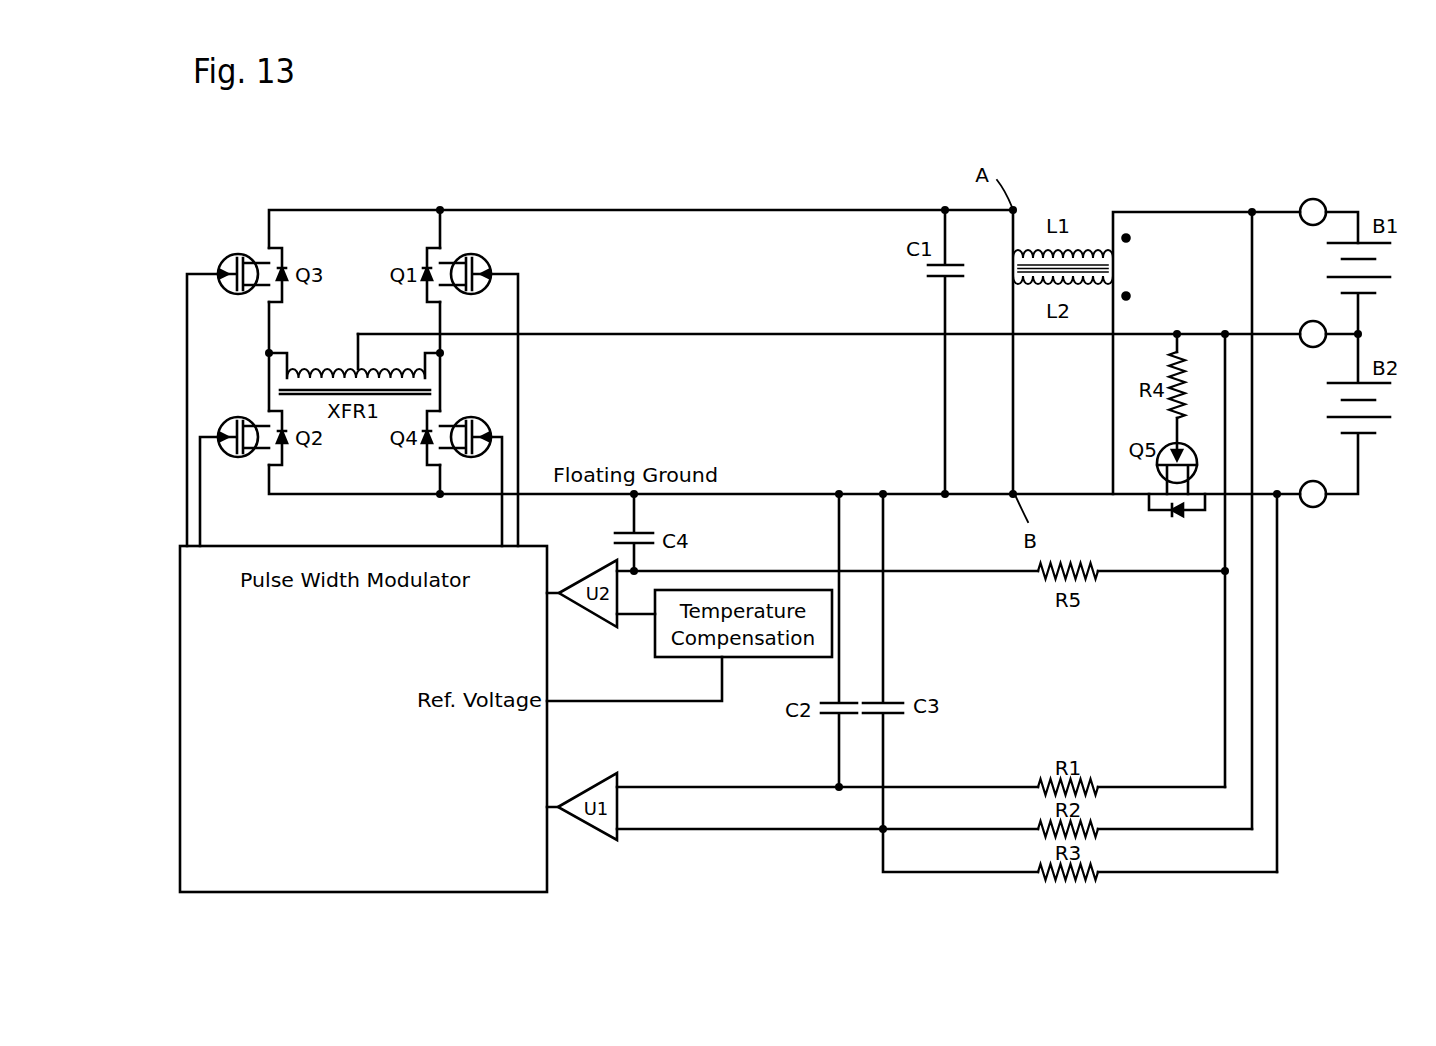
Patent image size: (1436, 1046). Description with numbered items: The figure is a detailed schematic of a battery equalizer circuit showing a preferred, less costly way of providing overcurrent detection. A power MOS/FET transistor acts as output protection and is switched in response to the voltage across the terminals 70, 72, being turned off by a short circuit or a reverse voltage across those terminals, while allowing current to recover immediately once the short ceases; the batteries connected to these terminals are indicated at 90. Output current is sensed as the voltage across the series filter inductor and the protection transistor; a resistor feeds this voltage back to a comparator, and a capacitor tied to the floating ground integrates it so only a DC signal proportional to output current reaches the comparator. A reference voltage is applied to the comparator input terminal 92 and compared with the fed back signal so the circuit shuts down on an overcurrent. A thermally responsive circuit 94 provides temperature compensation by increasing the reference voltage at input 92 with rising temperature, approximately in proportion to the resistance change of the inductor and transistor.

The terminal 70 is at (1303, 345).
The terminal 72 is at (1322, 507).
The battery pack 90 is at (1362, 486).
The input terminal of comparator U2 92 is at (637, 617).
The thermally responsive circuit 94 is at (748, 658).